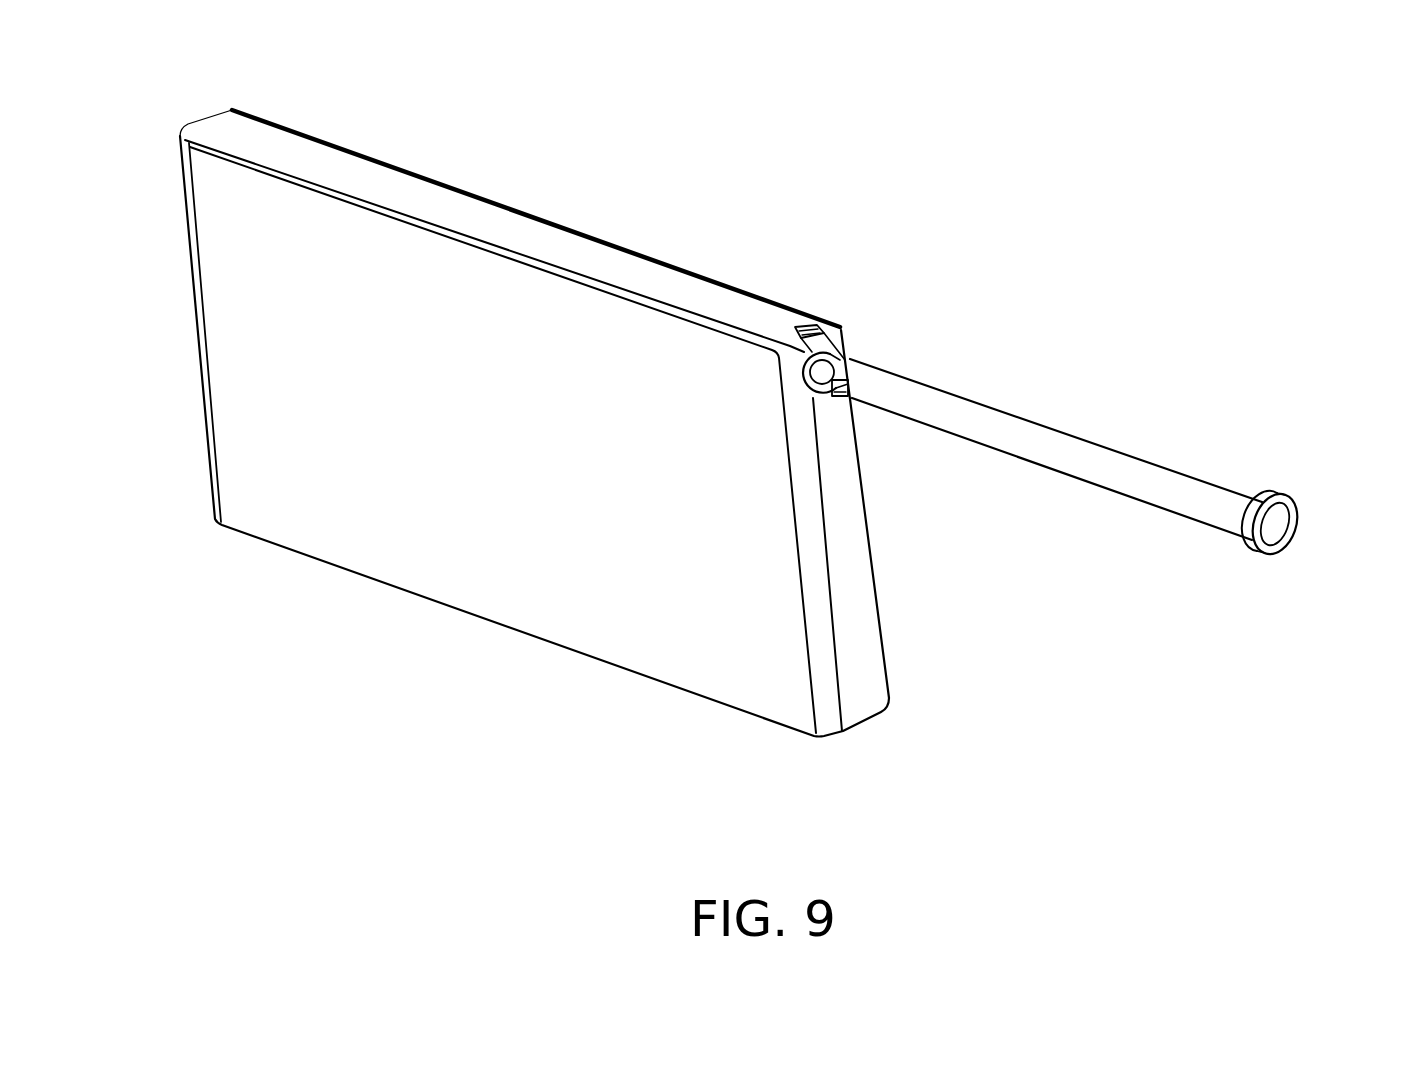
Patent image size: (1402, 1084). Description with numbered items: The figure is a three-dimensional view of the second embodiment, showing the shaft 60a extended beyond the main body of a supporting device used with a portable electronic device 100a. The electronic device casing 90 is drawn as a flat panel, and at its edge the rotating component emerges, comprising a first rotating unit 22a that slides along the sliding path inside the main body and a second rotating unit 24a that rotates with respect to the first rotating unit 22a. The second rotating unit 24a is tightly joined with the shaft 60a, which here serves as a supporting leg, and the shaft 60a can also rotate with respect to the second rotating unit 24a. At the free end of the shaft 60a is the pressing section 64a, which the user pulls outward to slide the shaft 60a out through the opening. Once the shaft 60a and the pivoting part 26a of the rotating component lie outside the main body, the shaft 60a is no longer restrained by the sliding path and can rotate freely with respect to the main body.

The portable electronic device 100a is at (114, 142).
The electronic device casing 90 is at (443, 207).
The first rotating unit 22a is at (805, 330).
The second rotating unit 24a is at (848, 330).
The pivoting part 26a is at (850, 420).
The shaft 60a is at (1037, 437).
The pressing section 64a is at (1273, 488).